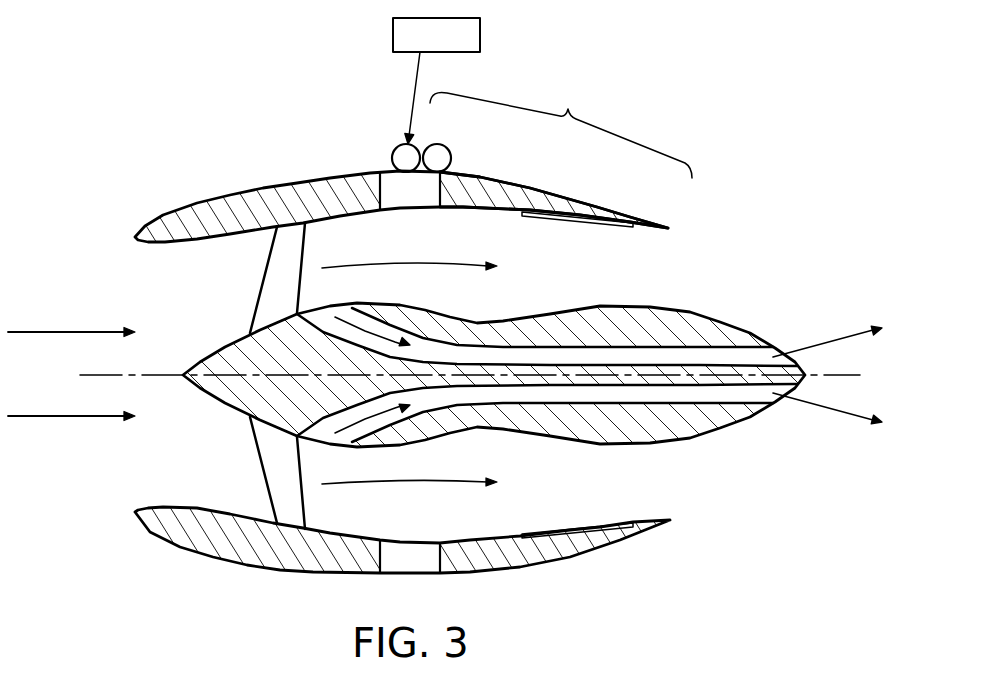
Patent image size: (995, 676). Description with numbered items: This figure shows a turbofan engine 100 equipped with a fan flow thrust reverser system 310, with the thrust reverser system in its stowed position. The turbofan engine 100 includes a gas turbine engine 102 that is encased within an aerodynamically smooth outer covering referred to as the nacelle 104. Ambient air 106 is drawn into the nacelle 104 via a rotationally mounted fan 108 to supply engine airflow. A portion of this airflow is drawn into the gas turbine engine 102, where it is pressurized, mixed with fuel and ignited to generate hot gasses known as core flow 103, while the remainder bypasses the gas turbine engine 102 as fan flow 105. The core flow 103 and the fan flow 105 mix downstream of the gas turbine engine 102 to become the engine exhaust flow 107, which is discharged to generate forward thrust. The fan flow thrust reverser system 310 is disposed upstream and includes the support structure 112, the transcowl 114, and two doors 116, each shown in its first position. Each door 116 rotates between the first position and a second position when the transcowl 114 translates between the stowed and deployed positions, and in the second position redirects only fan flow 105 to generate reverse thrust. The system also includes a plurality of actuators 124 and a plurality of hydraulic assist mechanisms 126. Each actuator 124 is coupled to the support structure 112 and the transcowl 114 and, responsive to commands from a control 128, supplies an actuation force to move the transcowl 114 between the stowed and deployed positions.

The turbofan engine 100 is at (210, 133).
The gas turbine engine 102 is at (690, 311).
The core flow 103 is at (385, 334).
The nacelle 104 is at (180, 209).
The fan flow 105 is at (421, 265).
The ambient air 106 is at (80, 331).
The engine exhaust flow 107 is at (853, 325).
The fan 108 is at (285, 230).
The support structure 112 is at (382, 175).
The transcowl 114 is at (513, 188).
The door 116 is at (578, 229).
The actuator 124 is at (403, 141).
The hydraulic assist mechanism 126 is at (450, 152).
The control 128 is at (481, 30).
The fan flow thrust reverser system 310 is at (561, 130).